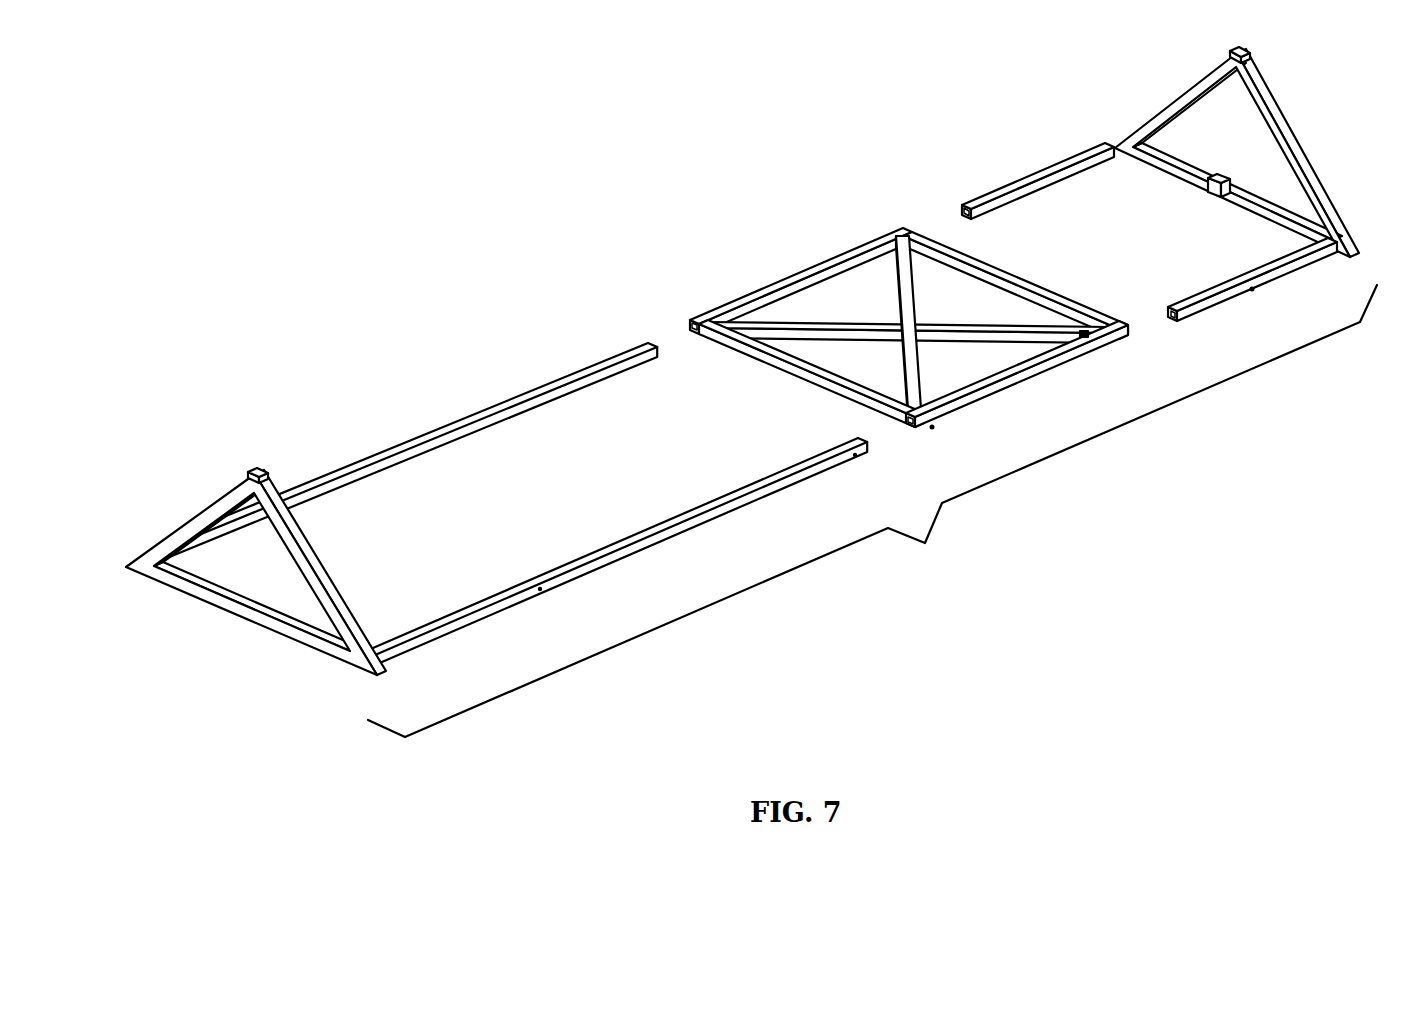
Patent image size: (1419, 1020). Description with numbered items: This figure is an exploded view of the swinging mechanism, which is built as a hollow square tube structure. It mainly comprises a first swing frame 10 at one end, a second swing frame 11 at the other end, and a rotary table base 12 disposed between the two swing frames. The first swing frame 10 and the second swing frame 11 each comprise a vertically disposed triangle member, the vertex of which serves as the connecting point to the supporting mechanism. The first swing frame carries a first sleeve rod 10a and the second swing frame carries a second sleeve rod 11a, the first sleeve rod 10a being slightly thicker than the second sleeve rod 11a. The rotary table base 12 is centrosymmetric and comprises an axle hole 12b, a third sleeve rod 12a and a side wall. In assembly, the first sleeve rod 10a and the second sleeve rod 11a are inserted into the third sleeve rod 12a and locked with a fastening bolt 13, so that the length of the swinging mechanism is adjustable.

The first swing frame 10 is at (496, 491).
The first sleeve rod 10a is at (571, 571).
The second swing frame 11 is at (1155, 202).
The second sleeve rod 11a is at (1204, 298).
The rotary table base 12 is at (909, 305).
The third sleeve rod 12a is at (1000, 395).
The axle hole 12b is at (908, 318).
The fastening bolt 13 is at (934, 428).